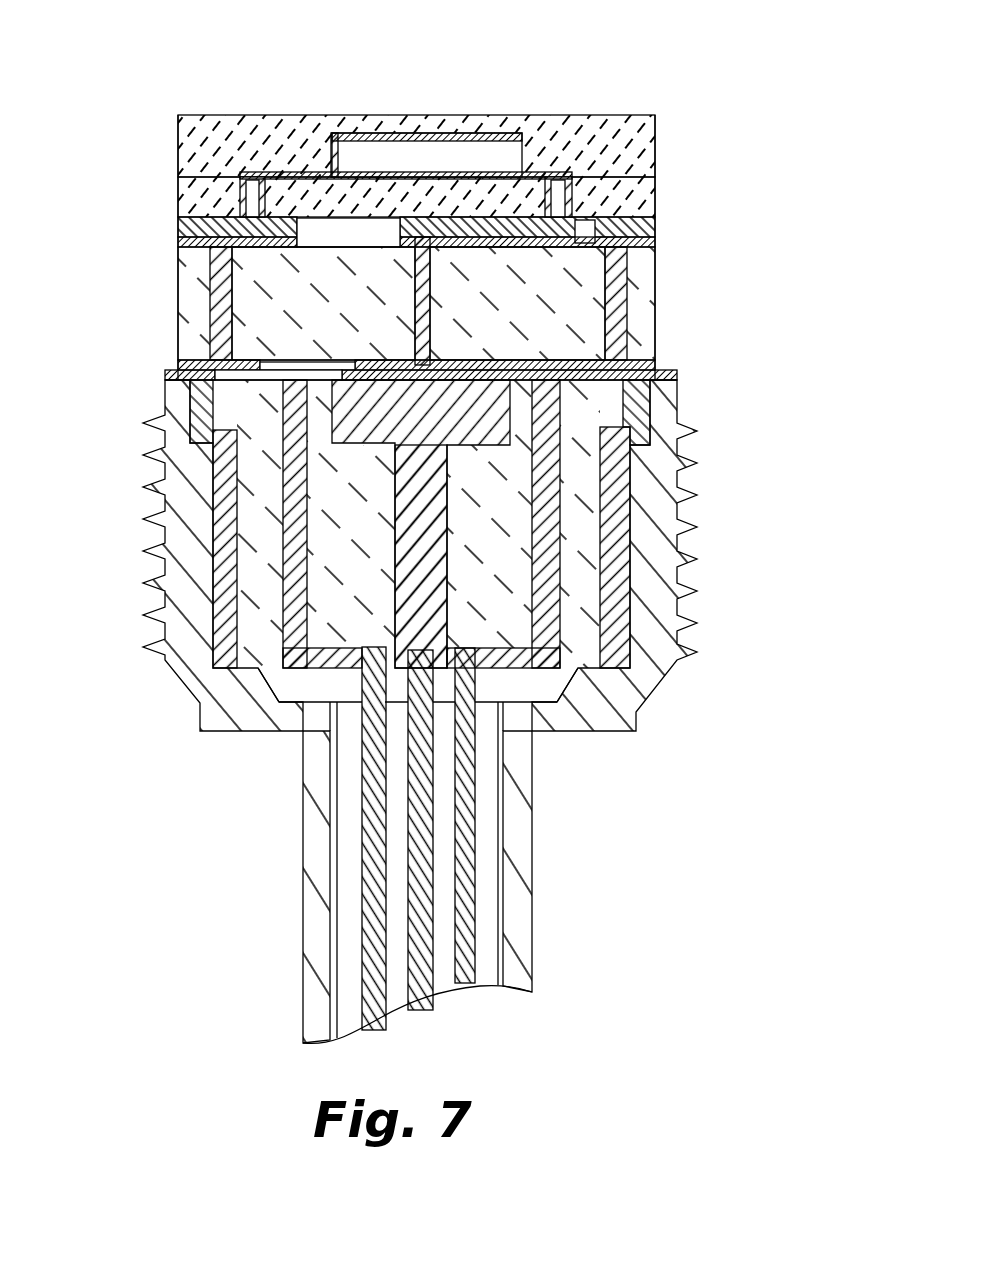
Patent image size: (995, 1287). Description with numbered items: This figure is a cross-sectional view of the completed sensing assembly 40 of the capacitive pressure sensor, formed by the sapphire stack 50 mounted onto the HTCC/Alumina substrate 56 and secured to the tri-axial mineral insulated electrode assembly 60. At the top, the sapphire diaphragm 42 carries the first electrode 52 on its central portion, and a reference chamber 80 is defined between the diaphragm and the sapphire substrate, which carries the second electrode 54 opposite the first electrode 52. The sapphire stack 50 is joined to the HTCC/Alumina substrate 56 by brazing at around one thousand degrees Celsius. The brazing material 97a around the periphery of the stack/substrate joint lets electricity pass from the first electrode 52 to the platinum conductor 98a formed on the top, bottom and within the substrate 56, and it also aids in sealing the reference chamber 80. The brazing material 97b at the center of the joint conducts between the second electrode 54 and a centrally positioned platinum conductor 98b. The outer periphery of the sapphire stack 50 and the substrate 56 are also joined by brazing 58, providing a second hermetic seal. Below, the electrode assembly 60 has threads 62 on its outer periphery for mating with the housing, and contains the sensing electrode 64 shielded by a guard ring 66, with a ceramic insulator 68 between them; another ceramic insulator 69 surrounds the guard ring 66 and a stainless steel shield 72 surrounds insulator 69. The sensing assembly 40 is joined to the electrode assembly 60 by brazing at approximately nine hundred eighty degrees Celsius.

The sensing assembly 40 is at (778, 163).
The sapphire diaphragm 42 is at (231, 106).
The sapphire stack 50 is at (152, 146).
The first electrode 52 is at (403, 138).
The second electrode 54 is at (440, 173).
The HTCC/Alumina substrate 56 is at (666, 276).
The brazing 58 is at (677, 373).
The electrode assembly 60 is at (560, 845).
The threads 62 is at (688, 650).
The sensing electrode 64 is at (463, 427).
The guard ring 66 is at (530, 583).
The ceramic insulator 68 is at (300, 577).
The ceramic insulator 69 is at (273, 648).
The stainless steel shield 72 is at (212, 667).
The reference chamber 80 is at (362, 153).
The brazing material 97a is at (657, 227).
The brazing material 97b is at (527, 220).
The platinum conductor 98a is at (620, 342).
The platinum conductor 98b is at (413, 318).